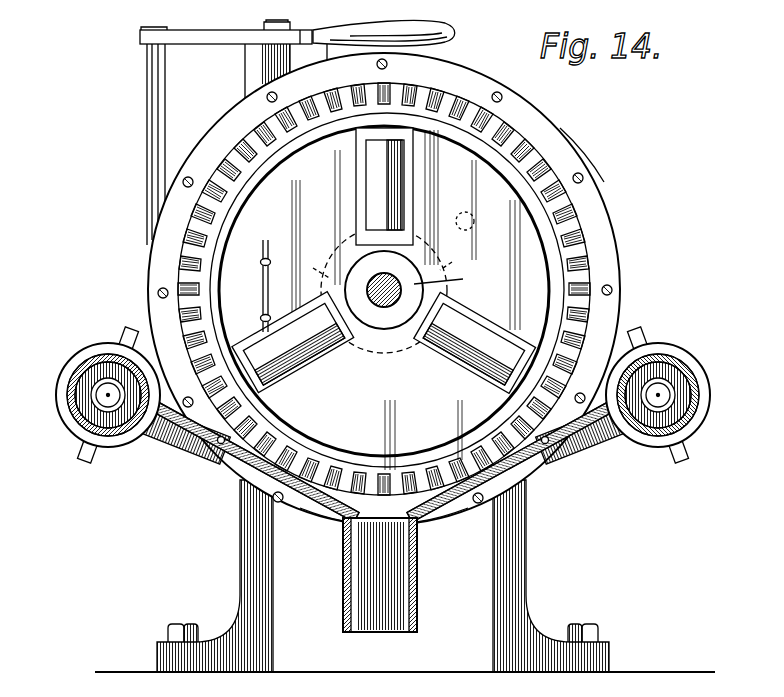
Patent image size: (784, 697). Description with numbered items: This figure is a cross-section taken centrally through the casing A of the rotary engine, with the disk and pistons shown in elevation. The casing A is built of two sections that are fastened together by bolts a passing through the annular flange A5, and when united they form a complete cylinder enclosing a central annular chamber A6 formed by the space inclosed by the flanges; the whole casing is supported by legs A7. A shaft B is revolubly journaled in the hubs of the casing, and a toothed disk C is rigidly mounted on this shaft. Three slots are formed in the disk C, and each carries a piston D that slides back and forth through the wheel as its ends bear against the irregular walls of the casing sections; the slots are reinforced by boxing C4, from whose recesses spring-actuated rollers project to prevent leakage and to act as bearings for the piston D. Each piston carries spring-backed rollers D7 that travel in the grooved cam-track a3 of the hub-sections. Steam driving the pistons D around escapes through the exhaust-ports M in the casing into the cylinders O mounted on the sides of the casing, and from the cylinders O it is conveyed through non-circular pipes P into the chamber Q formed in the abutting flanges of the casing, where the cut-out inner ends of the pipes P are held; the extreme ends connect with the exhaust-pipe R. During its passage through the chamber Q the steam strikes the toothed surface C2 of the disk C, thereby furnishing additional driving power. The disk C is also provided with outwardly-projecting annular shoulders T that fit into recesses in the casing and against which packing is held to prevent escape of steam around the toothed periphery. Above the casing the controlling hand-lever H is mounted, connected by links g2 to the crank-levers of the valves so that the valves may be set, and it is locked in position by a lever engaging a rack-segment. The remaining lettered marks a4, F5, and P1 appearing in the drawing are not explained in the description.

The casing A is at (391, 289).
The annular flange A5 is at (581, 158).
The central annular chamber A6 is at (643, 238).
The legs A7 is at (540, 572).
The bolts a is at (377, 66).
The grooved cam-track a3 is at (384, 257).
The pins a4 is at (262, 312).
The shaft B is at (391, 283).
The toothed disk C is at (291, 250).
The toothed surface C2 is at (420, 87).
The boxing C4 is at (488, 396).
The piston D is at (405, 190).
The roller D7 is at (352, 343).
The plate F5 is at (452, 315).
The controlling hand-lever H is at (207, 38).
The links g2 is at (134, 144).
The exhaust-ports M is at (475, 223).
The annular shoulders T is at (226, 235).
The cylinders O is at (73, 408).
The non-circular pipes P is at (185, 433).
The links P1 is at (224, 457).
The chamber Q is at (330, 510).
The exhaust-pipe R is at (380, 575).